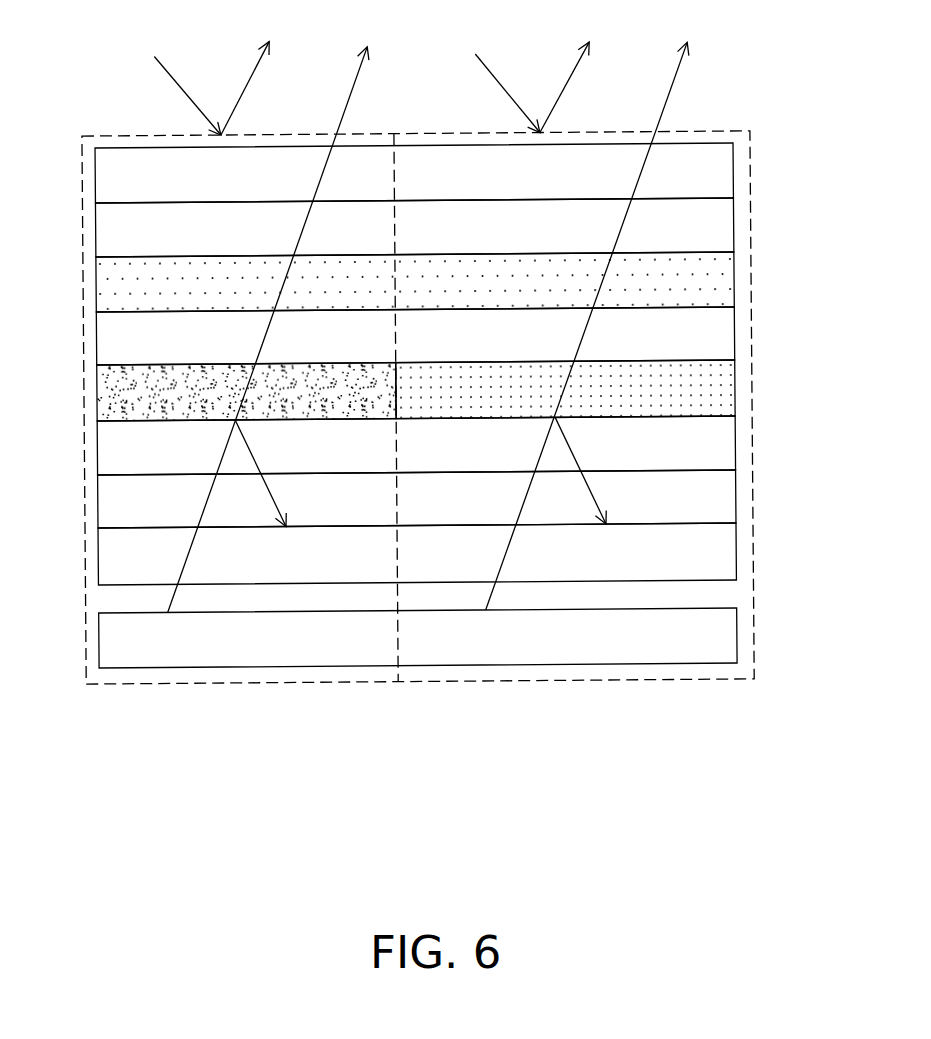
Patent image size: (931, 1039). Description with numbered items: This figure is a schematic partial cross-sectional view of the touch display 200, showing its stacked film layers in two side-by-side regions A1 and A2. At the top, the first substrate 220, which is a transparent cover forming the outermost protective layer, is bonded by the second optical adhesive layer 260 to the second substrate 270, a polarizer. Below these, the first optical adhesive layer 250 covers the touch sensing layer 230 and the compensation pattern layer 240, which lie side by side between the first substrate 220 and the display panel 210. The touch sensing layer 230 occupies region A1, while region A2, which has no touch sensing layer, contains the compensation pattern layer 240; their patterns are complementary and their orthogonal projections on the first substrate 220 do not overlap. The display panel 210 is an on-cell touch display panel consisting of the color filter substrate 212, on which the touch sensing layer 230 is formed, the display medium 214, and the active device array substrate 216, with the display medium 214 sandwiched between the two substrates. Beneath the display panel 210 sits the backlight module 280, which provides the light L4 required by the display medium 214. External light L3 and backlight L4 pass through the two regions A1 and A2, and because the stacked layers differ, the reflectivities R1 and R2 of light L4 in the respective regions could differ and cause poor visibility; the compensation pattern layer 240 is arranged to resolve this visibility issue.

The touch display 200 is at (448, 441).
The display panel 210 is at (488, 500).
The color filter substrate 212 is at (776, 449).
The display medium 214 is at (776, 489).
The active device array substrate 216 is at (459, 551).
The first substrate 220 is at (776, 162).
The touch sensing layer 230 is at (112, 393).
The compensation pattern layer 240 is at (776, 385).
The first optical adhesive layer 250 is at (776, 327).
The second optical adhesive layer 260 is at (776, 217).
The second substrate 270 is at (776, 271).
The backlight module 280 is at (776, 627).
The region A1 is at (53, 88).
The region A2 is at (778, 103).
The light L3 is at (366, 78).
The light L4 is at (434, 311).
The reflectivity R1 is at (283, 473).
The reflectivity R2 is at (604, 471).